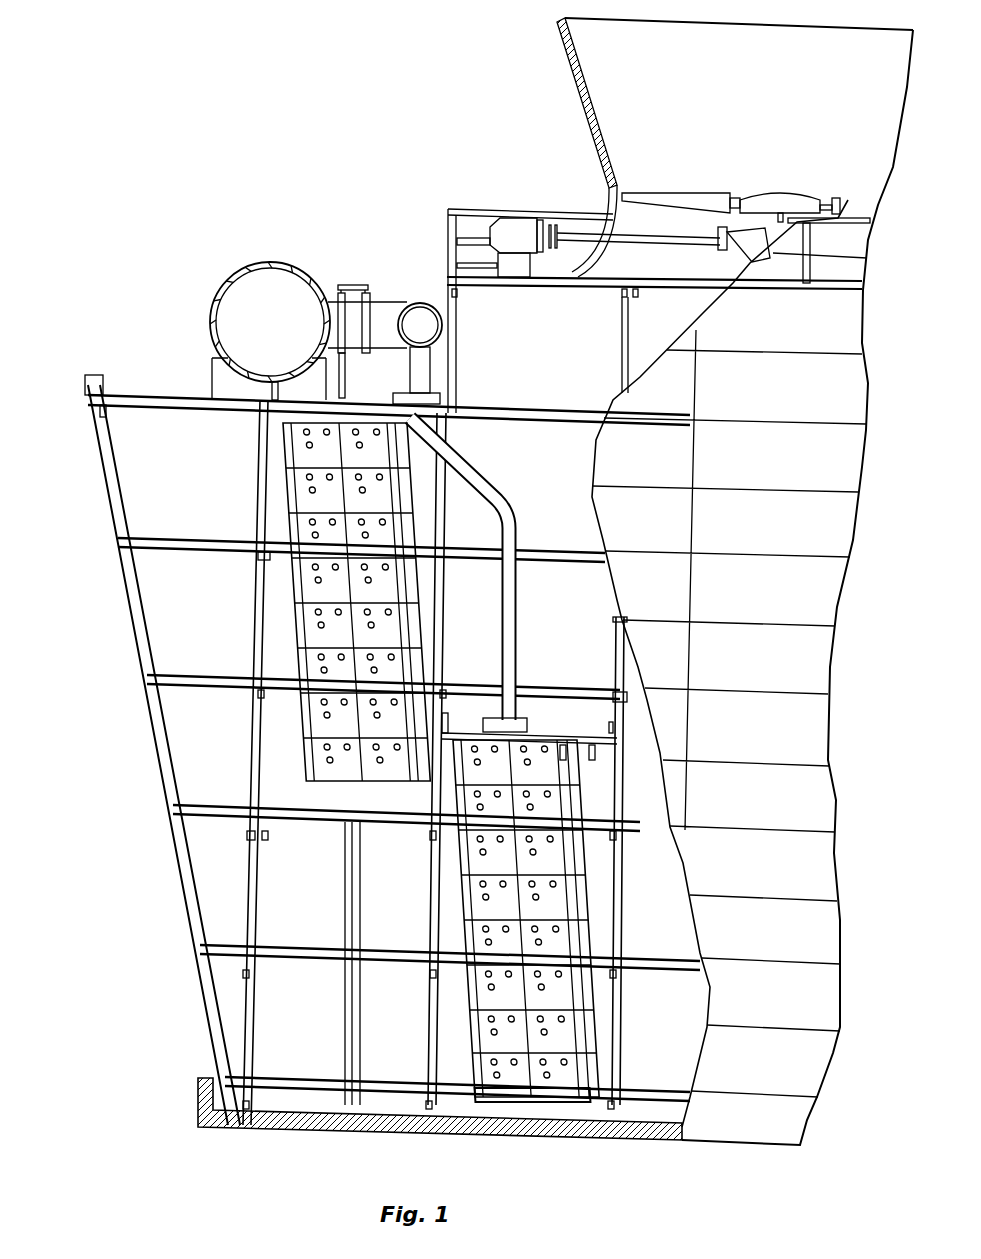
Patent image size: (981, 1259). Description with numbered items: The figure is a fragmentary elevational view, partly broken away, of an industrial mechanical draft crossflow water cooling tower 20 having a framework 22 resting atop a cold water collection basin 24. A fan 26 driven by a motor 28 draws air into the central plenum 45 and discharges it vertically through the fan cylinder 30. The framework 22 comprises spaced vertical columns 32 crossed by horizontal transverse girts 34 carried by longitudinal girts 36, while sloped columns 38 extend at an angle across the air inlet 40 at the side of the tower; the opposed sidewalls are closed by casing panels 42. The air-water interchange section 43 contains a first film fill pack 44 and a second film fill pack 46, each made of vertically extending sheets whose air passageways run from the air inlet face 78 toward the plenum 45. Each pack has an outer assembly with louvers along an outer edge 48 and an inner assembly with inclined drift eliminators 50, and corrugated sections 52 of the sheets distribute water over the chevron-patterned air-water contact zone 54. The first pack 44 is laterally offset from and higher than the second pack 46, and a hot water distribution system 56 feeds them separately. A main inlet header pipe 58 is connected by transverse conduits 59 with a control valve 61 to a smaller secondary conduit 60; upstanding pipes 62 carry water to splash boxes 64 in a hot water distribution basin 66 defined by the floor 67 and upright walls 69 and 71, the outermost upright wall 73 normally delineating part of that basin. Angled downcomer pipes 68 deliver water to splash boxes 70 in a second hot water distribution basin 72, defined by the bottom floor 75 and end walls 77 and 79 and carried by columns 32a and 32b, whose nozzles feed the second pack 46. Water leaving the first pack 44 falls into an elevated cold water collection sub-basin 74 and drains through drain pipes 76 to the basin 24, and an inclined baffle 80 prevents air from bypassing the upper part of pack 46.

The water cooling tower 20 is at (247, 95).
The framework 22 is at (385, 711).
The cold water collection basin 24 is at (268, 1135).
The fan 26 is at (700, 187).
The motor 28 is at (517, 227).
The fan cylinder 30 is at (585, 100).
The vertical columns 32 is at (248, 1022).
The column 32a is at (432, 858).
The column 32b is at (613, 915).
The horizontal transverse girts 34 is at (205, 538).
The longitudinal girts 36 is at (268, 562).
The sloped columns 38 is at (137, 620).
The air inlet 40 is at (155, 743).
The casing panels 42 is at (739, 581).
The air-water interchange section 43 is at (297, 792).
The first film fill pack 44 is at (282, 605).
The central plenum 45 is at (545, 533).
The second film fill pack 46 is at (455, 910).
The outer edge 48 is at (307, 722).
The drift eliminators 50 is at (405, 625).
The corrugated sections 52 is at (377, 687).
The air-water contact zone 54 is at (312, 667).
The hot water distribution system 56 is at (150, 325).
The main inlet header pipe 58 is at (272, 300).
The transverse conduits 59 is at (394, 310).
The secondary conduit 60 is at (423, 320).
The control valve 61 is at (382, 303).
The upstanding pipes 62 is at (417, 383).
The splash boxes 64 is at (430, 381).
The hot water distribution basin 66 is at (292, 420).
The floor 67 is at (343, 398).
The downcomer pipes 68 is at (502, 488).
The upright wall 69 is at (272, 390).
The splash boxes 70 is at (510, 725).
The upright wall 71 is at (442, 402).
The second hot water distribution basin 72 is at (529, 744).
The outermost upright wall 73 is at (105, 385).
The cold water collection sub-basin 74 is at (322, 820).
The bottom floor 75 is at (592, 745).
The drain pipes 76 is at (350, 910).
The upright end wall 77 is at (450, 723).
The air inlet face 78 is at (283, 477).
The upright end wall 79 is at (610, 730).
The inclined baffle 80 is at (427, 783).